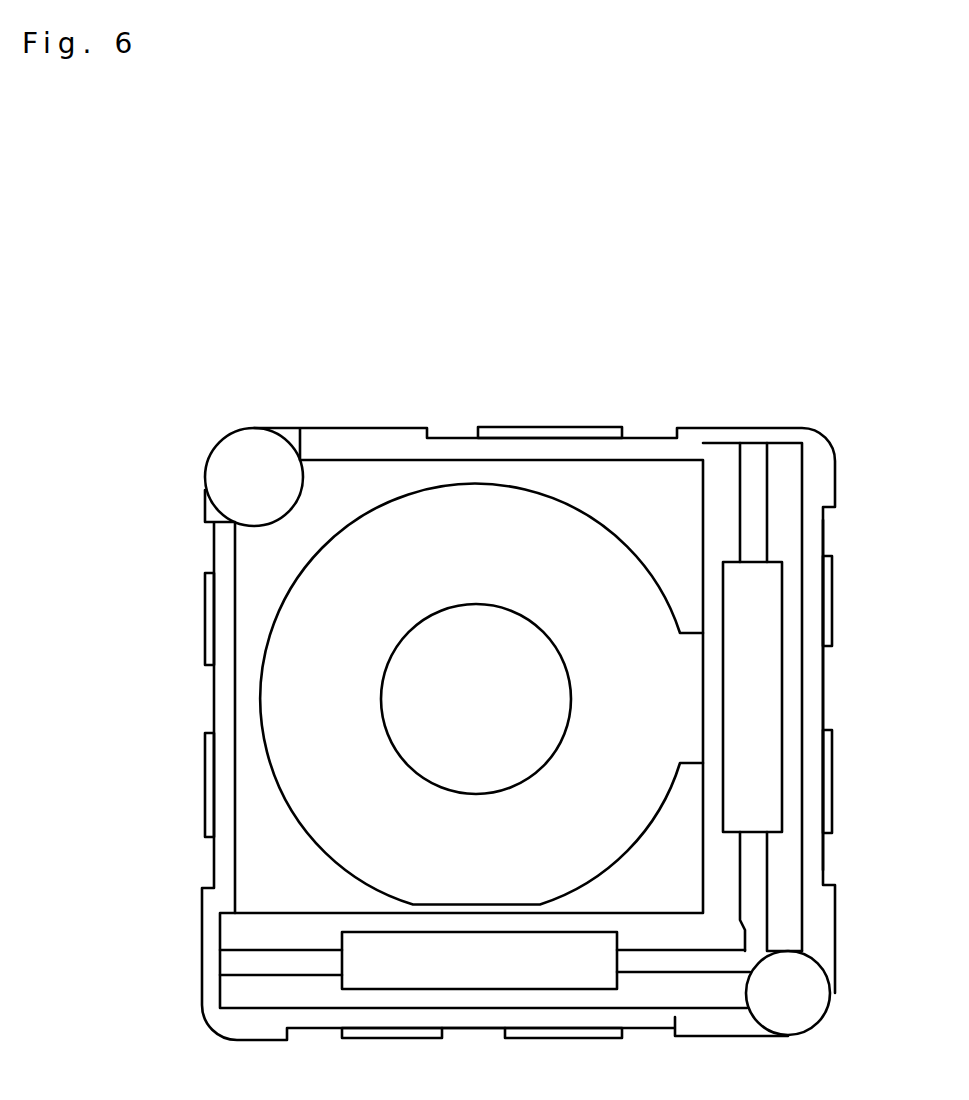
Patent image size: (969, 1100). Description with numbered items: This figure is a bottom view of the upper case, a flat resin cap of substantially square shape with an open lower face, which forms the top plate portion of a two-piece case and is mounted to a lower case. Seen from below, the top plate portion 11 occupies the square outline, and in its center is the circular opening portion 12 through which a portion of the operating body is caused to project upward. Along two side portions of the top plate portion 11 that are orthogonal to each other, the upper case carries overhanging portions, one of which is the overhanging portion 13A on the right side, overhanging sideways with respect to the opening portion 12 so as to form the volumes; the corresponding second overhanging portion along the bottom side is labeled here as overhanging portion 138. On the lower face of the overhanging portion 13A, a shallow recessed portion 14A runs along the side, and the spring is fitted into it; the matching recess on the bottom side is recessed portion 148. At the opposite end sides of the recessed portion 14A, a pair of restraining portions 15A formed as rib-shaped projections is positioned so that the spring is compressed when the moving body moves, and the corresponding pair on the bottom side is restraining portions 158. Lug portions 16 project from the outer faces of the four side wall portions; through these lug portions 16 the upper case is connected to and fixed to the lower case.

The top plate portion 11 is at (258, 550).
The opening portion 12 is at (478, 620).
The overhanging portion 13A is at (823, 698).
The recessed portion 14A is at (757, 662).
The restraining portion 15A is at (757, 523).
The lug portion 16 is at (588, 422).
The conductive patterns 158 is at (263, 975).
The chip component 148 is at (422, 973).
The bottom wall 138 is at (492, 1032).